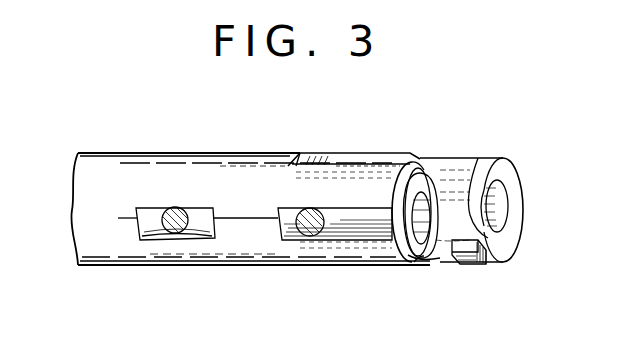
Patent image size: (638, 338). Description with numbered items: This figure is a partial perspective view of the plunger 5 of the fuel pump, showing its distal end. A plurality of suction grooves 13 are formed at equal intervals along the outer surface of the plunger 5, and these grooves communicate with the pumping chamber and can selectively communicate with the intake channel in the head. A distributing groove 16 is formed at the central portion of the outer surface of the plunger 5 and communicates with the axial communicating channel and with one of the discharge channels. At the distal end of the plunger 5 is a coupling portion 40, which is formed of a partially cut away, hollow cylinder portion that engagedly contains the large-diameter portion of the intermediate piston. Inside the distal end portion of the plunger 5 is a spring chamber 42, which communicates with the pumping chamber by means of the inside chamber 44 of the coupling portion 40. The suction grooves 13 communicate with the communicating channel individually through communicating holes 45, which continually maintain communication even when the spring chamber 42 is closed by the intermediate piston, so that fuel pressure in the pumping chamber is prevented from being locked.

The plunger 5 is at (250, 153).
The suction grooves 13 is at (382, 161).
The distributing groove 16 is at (150, 208).
The coupling portion 40 is at (461, 190).
The spring chamber 42 is at (403, 256).
The inside chamber 44 is at (440, 250).
The communicating holes 45 is at (303, 241).